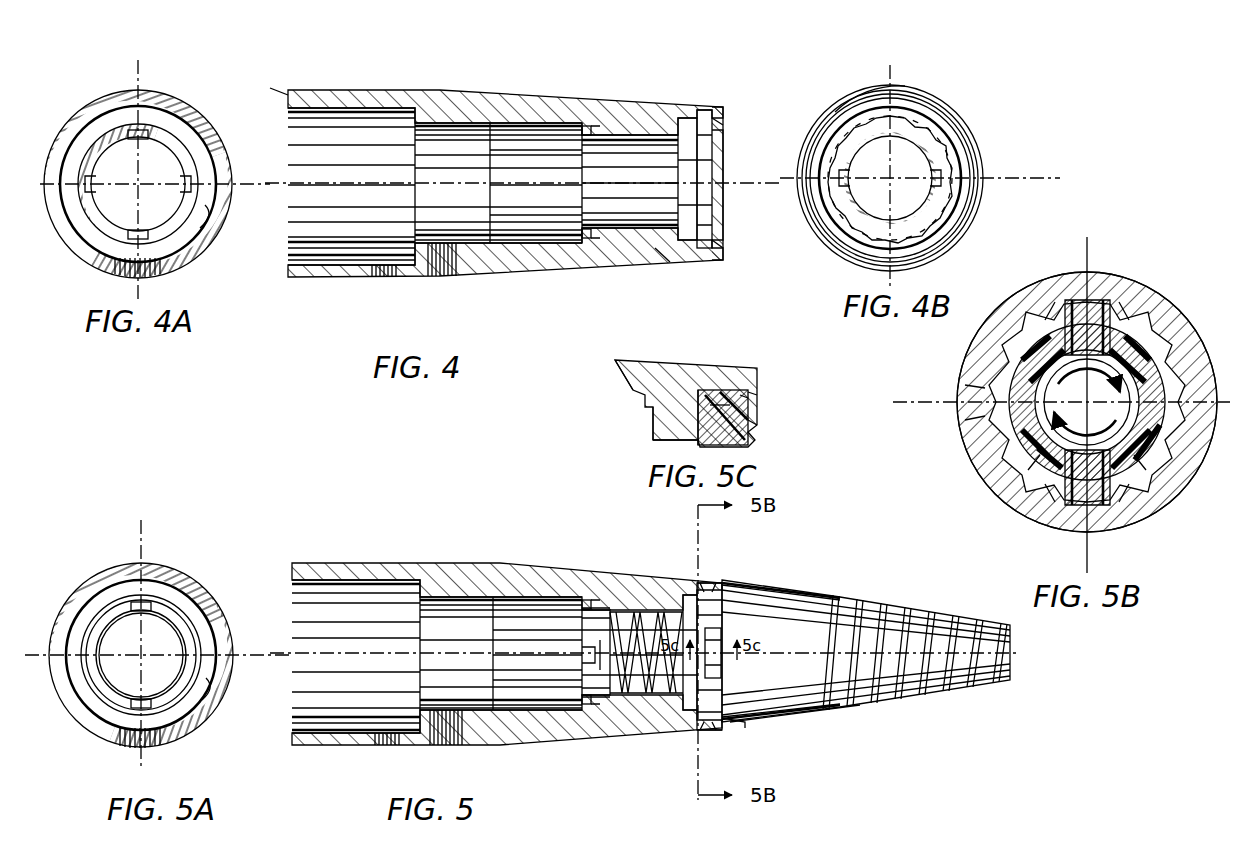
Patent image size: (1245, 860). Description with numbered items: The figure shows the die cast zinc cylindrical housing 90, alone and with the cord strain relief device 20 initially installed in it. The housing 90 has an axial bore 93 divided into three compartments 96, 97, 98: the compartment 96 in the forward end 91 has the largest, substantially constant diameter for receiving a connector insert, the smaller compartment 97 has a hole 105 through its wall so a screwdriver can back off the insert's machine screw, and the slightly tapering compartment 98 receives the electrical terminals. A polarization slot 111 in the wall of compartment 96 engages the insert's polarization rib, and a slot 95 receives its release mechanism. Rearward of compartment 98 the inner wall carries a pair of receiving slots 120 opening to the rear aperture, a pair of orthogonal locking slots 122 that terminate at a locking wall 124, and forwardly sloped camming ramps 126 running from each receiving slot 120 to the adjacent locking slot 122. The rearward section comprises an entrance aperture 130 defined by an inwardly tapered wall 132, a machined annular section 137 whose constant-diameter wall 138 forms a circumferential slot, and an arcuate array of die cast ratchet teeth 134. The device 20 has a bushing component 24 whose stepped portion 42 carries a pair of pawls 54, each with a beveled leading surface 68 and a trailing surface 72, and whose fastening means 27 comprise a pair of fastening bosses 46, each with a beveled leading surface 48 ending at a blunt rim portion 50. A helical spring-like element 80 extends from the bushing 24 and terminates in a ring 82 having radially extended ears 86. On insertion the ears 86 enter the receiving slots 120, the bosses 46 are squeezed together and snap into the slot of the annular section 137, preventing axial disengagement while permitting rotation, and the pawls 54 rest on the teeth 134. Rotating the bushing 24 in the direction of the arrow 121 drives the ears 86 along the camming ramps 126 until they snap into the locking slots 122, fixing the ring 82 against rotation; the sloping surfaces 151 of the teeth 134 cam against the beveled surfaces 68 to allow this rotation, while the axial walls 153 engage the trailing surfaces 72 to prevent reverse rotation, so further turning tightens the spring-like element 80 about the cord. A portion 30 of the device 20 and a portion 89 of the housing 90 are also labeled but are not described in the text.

In FIG. 5, the cord strain relief device 20 is at (858, 717).
In FIG. 5, the bushing component 24 is at (795, 594).
In FIG. 5C, the fastening means 27 is at (690, 442).
In FIG. 5, the ribbed nose piece 30 is at (920, 600).
In FIG. 5B, the stepped portion 42 is at (1142, 332).
In FIG. 5C, the fastening bosses 46 is at (752, 394).
In FIG. 5, the fastening bosses 46 is at (722, 645).
In FIG. 5C, the beveled leading surface 48 is at (660, 380).
In FIG. 5C, the rim portion 50 is at (722, 390).
In FIG. 5B, the pawls 54 is at (1055, 305).
In FIG. 5B, the beveled leading surface 68 is at (1068, 300).
In FIG. 5B, the trailing surface 72 is at (1092, 300).
In FIG. 5, the helical spring-like element 80 is at (640, 612).
In FIG. 5, the ring 82 is at (596, 610).
In FIG. 5A, the ears 86 is at (90, 625).
In FIG. 5, the ears 86 is at (598, 700).
In FIG. 4, the end face 89 is at (726, 108).
In FIG. 4B, the end face 89 is at (962, 200).
In FIG. 5C, the end face 89 is at (626, 352).
In FIG. 4A, the housing 90 is at (200, 112).
In FIG. 4, the housing 90 is at (505, 88).
In FIG. 4B, the housing 90 is at (968, 110).
In FIG. 5B, the housing 90 is at (1143, 285).
In FIG. 5A, the housing 90 is at (120, 562).
In FIG. 5, the housing 90 is at (410, 563).
In FIG. 4, the forward end 91 is at (290, 86).
In FIG. 4B, the forward end 91 is at (855, 97).
In FIG. 4A, the axial bore 93 is at (152, 193).
In FIG. 4, the axial bore 93 is at (548, 193).
In FIG. 4B, the axial bore 93 is at (902, 191).
In FIG. 5, the axial bore 93 is at (468, 648).
In FIG. 4A, the slot 95 is at (148, 276).
In FIG. 4, the slot 95 is at (348, 278).
In FIG. 5A, the slot 95 is at (155, 747).
In FIG. 5, the slot 95 is at (350, 746).
In FIG. 4, the compartment 96 is at (375, 210).
In FIG. 5, the compartment 96 is at (335, 620).
In FIG. 4, the compartment 97 is at (432, 205).
In FIG. 5, the compartment 97 is at (445, 615).
In FIG. 4, the compartment 98 is at (502, 216).
In FIG. 5, the compartment 98 is at (515, 615).
In FIG. 4, the hole 105 is at (445, 277).
In FIG. 5, the hole 105 is at (445, 746).
In FIG. 4A, the polarization slot 111 is at (210, 215).
In FIG. 5A, the polarization slot 111 is at (215, 686).
In FIG. 4A, the receiving slots 120 is at (192, 178).
In FIG. 4, the receiving slots 120 is at (668, 193).
In FIG. 4B, the receiving slots 120 is at (941, 172).
In FIG. 5B, the arrow 121 is at (1087, 402).
In FIG. 4A, the locking slots 122 is at (145, 130).
In FIG. 4, the locking slots 122 is at (588, 125).
In FIG. 5A, the locking slots 122 is at (146, 602).
In FIG. 5, the locking slots 122 is at (585, 600).
In FIG. 4, the locking wall 124 is at (628, 124).
In FIG. 5, the locking wall 124 is at (598, 612).
In FIG. 4A, the camming ramps 126 is at (178, 150).
In FIG. 4, the camming ramps 126 is at (542, 243).
In FIG. 5A, the camming ramps 126 is at (170, 600).
In FIG. 4, the entrance aperture 130 is at (720, 160).
In FIG. 5C, the entrance aperture 130 is at (770, 406).
In FIG. 4, the tapered wall 132 is at (716, 124).
In FIG. 4B, the tapered wall 132 is at (948, 135).
In FIG. 5C, the tapered wall 132 is at (758, 400).
In FIG. 5, the tapered wall 132 is at (745, 726).
In FIG. 4, the ratchet teeth 134 is at (690, 118).
In FIG. 4B, the ratchet teeth 134 is at (892, 116).
In FIG. 5B, the ratchet teeth 134 is at (1102, 302).
In FIG. 5C, the ratchet teeth 134 is at (655, 412).
In FIG. 5, the ratchet teeth 134 is at (690, 652).
In FIG. 4, the annular section 137 is at (710, 111).
In FIG. 5C, the annular section 137 is at (705, 388).
In FIG. 5, the annular section 137 is at (708, 583).
In FIG. 4, the wall 138 is at (660, 262).
In FIG. 5C, the wall 138 is at (742, 393).
In FIG. 5B, the sloping surfaces 151 is at (962, 388).
In FIG. 5B, the axial walls 153 is at (963, 422).